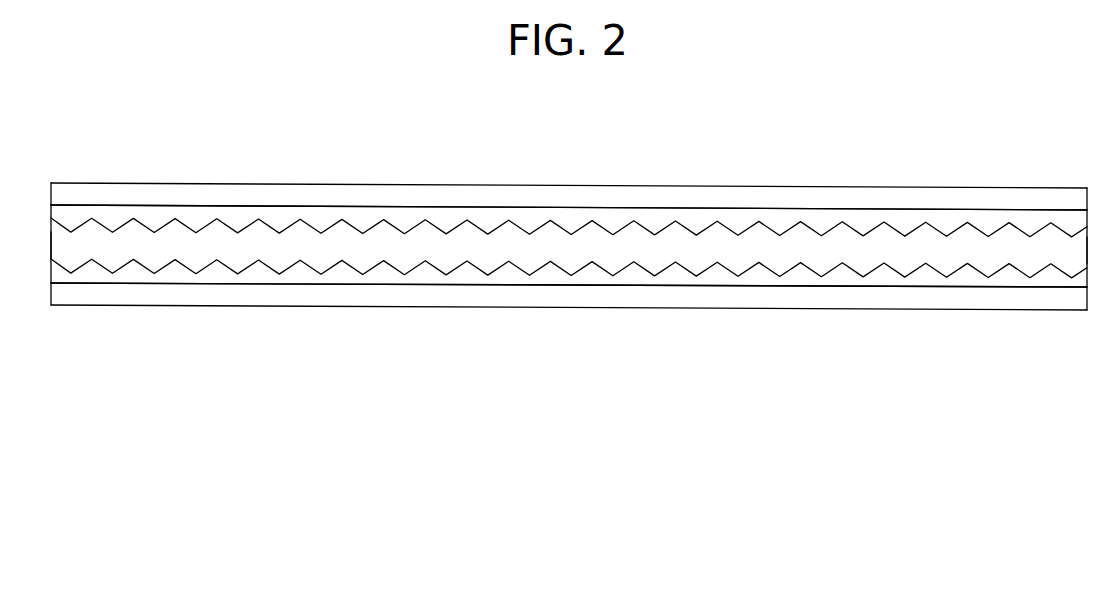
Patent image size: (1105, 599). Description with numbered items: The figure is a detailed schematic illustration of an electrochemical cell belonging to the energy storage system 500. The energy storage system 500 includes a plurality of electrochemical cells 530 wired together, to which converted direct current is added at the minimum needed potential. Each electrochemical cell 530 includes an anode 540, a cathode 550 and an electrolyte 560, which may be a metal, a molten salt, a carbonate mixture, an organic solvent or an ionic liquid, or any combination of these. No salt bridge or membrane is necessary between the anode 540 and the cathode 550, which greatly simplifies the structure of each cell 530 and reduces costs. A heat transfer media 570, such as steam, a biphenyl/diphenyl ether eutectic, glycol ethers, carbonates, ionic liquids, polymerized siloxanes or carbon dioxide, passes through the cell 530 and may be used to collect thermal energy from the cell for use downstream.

The energy storage system 500 is at (437, 462).
The electrochemical cell 530 is at (618, 168).
The anode 540 is at (280, 220).
The cathode 550 is at (508, 273).
The electrolyte 560 is at (321, 253).
The heat transfer media 570 is at (213, 195).